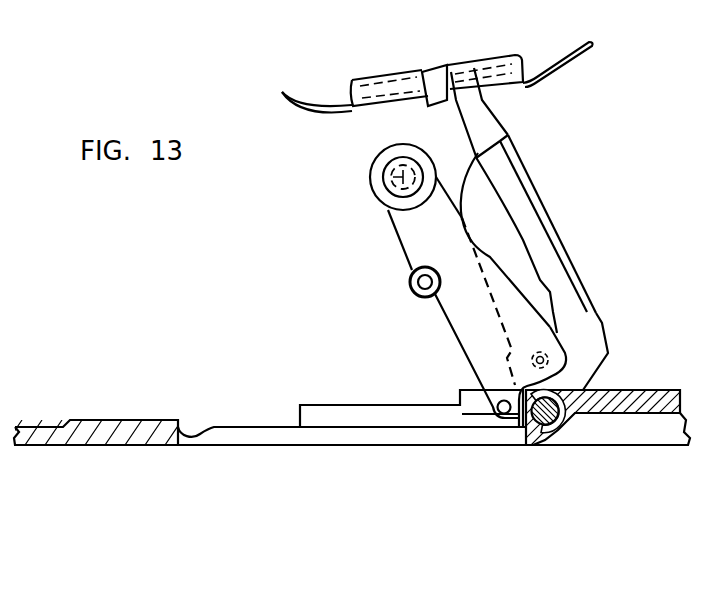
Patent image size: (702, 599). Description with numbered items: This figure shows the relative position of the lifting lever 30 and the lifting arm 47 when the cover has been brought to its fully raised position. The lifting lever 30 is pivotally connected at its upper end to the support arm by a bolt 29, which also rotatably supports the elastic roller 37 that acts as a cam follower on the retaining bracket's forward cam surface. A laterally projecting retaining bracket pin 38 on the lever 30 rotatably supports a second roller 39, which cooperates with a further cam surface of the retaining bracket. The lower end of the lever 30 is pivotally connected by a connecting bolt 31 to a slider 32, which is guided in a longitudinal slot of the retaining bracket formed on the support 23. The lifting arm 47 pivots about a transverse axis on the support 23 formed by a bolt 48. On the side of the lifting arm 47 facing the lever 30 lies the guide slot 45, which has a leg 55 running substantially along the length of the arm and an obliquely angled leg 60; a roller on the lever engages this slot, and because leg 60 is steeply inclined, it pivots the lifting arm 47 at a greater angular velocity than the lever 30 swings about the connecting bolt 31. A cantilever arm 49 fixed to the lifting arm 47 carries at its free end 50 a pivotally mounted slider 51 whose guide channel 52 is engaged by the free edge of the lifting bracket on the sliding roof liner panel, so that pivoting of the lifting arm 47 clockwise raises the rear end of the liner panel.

The support 23 is at (628, 437).
The bolt 29 is at (392, 180).
The lifting lever 30 is at (464, 330).
The connecting bolt 31 is at (504, 414).
The slider 32 is at (472, 410).
The roller 37 is at (377, 172).
The retaining bracket pin 38 is at (418, 292).
The roller 39 is at (419, 284).
The guide slot 45 is at (562, 303).
The lifting arm 47 is at (585, 366).
The bolt 48 is at (549, 428).
The cantilever arm 49 is at (478, 118).
The free end 50 is at (437, 78).
The slider 51 is at (384, 80).
The guide channel 52 is at (525, 60).
The leg 55 is at (527, 223).
The leg 60 is at (560, 331).